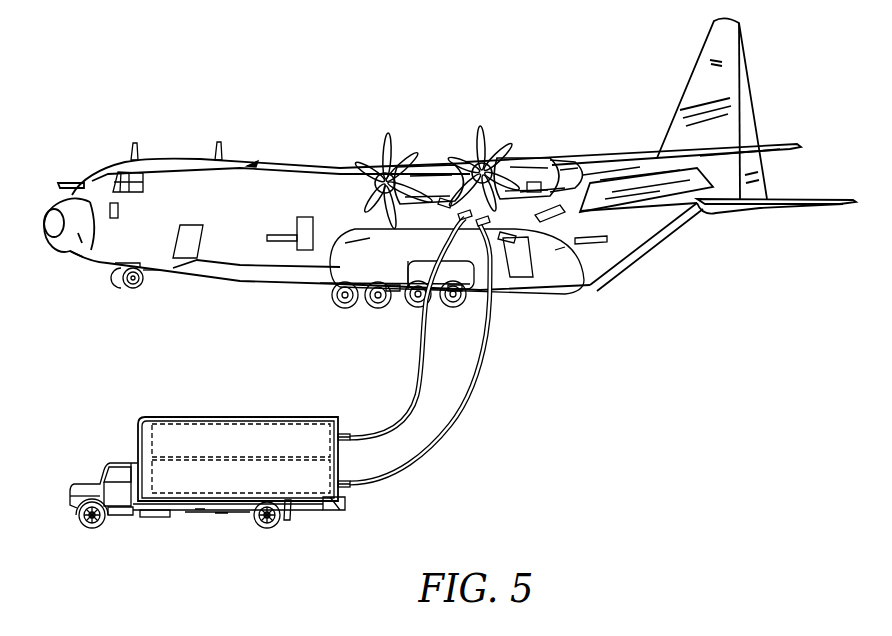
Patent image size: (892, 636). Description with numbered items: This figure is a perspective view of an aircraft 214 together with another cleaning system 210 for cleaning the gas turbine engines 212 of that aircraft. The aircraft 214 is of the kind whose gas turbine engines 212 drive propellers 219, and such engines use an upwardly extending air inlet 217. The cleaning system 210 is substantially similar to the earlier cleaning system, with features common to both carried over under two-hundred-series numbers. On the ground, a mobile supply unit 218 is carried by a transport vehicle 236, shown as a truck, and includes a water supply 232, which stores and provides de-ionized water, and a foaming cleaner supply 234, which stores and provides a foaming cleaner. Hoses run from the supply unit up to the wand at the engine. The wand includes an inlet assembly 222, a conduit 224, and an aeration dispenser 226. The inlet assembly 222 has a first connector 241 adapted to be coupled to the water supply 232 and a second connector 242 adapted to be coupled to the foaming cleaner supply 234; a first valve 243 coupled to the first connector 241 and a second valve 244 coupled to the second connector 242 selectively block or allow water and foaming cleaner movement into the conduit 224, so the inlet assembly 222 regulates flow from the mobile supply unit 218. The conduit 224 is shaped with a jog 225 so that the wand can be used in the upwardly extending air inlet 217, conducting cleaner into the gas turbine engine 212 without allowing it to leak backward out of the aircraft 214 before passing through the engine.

The cleaning system 210 is at (114, 404).
The gas turbine engines 212 is at (182, 155).
The aircraft 214 is at (607, 97).
The air inlet 217 is at (548, 222).
The mobile supply unit 218 is at (181, 469).
The propellers 219 is at (141, 150).
The inlet assembly 222 is at (446, 193).
The conduit 224 is at (516, 250).
The jog 225 is at (558, 186).
The aeration dispenser 226 is at (585, 152).
The water supply 232 is at (140, 436).
The foaming cleaner supply 234 is at (140, 462).
The transport vehicle 236 is at (58, 496).
The first connector 241 is at (375, 270).
The second connector 242 is at (510, 248).
The first valve 243 is at (393, 290).
The second valve 244 is at (455, 292).